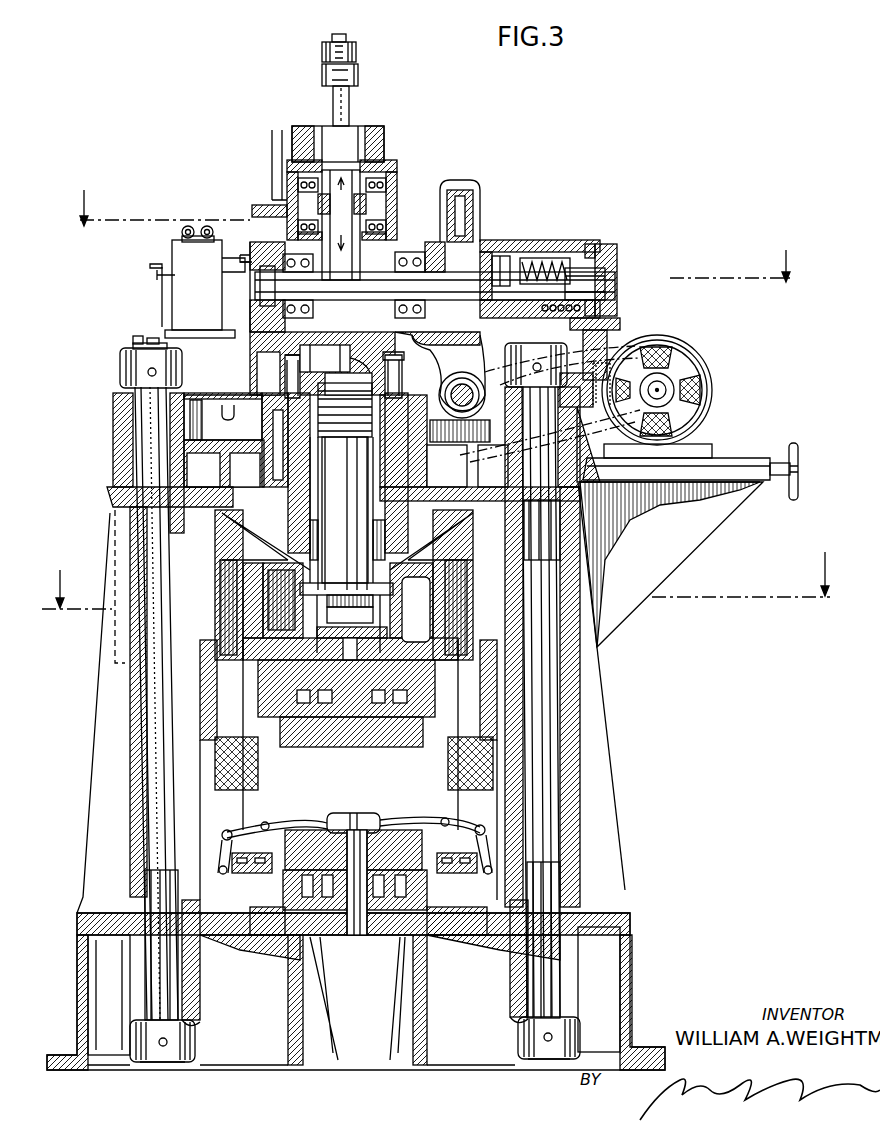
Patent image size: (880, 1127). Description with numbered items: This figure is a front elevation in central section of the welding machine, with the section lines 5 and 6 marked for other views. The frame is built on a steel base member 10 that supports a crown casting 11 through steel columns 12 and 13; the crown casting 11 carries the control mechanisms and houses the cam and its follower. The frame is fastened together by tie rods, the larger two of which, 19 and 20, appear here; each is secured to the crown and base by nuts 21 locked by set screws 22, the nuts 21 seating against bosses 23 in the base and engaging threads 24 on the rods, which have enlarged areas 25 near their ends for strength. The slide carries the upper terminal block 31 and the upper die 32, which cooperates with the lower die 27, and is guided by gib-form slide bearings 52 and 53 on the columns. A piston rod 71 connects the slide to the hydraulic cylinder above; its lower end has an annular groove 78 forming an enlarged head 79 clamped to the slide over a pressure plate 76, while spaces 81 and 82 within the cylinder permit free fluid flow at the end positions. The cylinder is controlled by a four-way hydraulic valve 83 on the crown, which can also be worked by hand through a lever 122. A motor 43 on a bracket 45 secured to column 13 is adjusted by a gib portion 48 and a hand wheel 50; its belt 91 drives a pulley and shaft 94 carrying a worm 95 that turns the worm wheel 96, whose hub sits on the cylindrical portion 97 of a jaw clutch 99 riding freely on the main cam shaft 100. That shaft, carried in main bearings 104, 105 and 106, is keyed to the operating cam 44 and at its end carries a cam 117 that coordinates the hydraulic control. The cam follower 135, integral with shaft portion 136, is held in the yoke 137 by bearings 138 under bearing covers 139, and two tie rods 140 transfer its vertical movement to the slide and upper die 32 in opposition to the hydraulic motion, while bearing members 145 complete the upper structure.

The section line 5- 5 is at (434, 225).
The section line 6- 6 is at (436, 569).
The base member 10 is at (80, 942).
The crown casting 11 is at (113, 425).
The steel column 12 is at (97, 770).
The steel column 13 is at (595, 752).
The tie rod 19 is at (138, 340).
The tie rod 20 is at (545, 805).
The nut 21 is at (120, 378).
The set screw 22 is at (148, 372).
The boss 23 is at (200, 990).
The thread 24 is at (152, 343).
The enlarged area 25 is at (542, 510).
The lower die 27 is at (413, 817).
The upper terminal block 31 is at (350, 690).
The upper die 32 is at (372, 737).
The motor 43 is at (713, 392).
The cam 44 is at (330, 357).
The bracket 45 is at (688, 527).
The gib portion 48 is at (720, 458).
The hand wheel 50 is at (794, 448).
The slide bearing 52 is at (245, 779).
The slide bearing 53 is at (450, 760).
The piston rod 71 is at (330, 500).
The pressure plate 76 is at (388, 633).
The annular groove 78 is at (345, 598).
The enlarged head portion 79 is at (350, 615).
The space 81 is at (385, 525).
The space 82 is at (400, 362).
The four-way hydraulic valve 83 is at (208, 280).
The belt 91 is at (601, 352).
The shaft 94 is at (480, 360).
The worm 95 is at (478, 385).
The worm wheel 96 is at (474, 214).
The cylindrical portion 97 is at (494, 248).
The jaw clutch 99 is at (538, 246).
The main cam shaft 100 is at (612, 278).
The main bearing 104 is at (270, 255).
The main bearing 105 is at (405, 256).
The main bearing 106 is at (618, 258).
The cam 117 is at (262, 378).
The lever 122 is at (157, 280).
The cam follower 135 is at (330, 130).
The shaft portion 136 is at (396, 186).
The yoke 137 is at (380, 135).
The bearing 138 is at (392, 166).
The bearing cover 139 is at (298, 192).
The tie rod 140 is at (352, 103).
The bearing member 145 is at (278, 130).